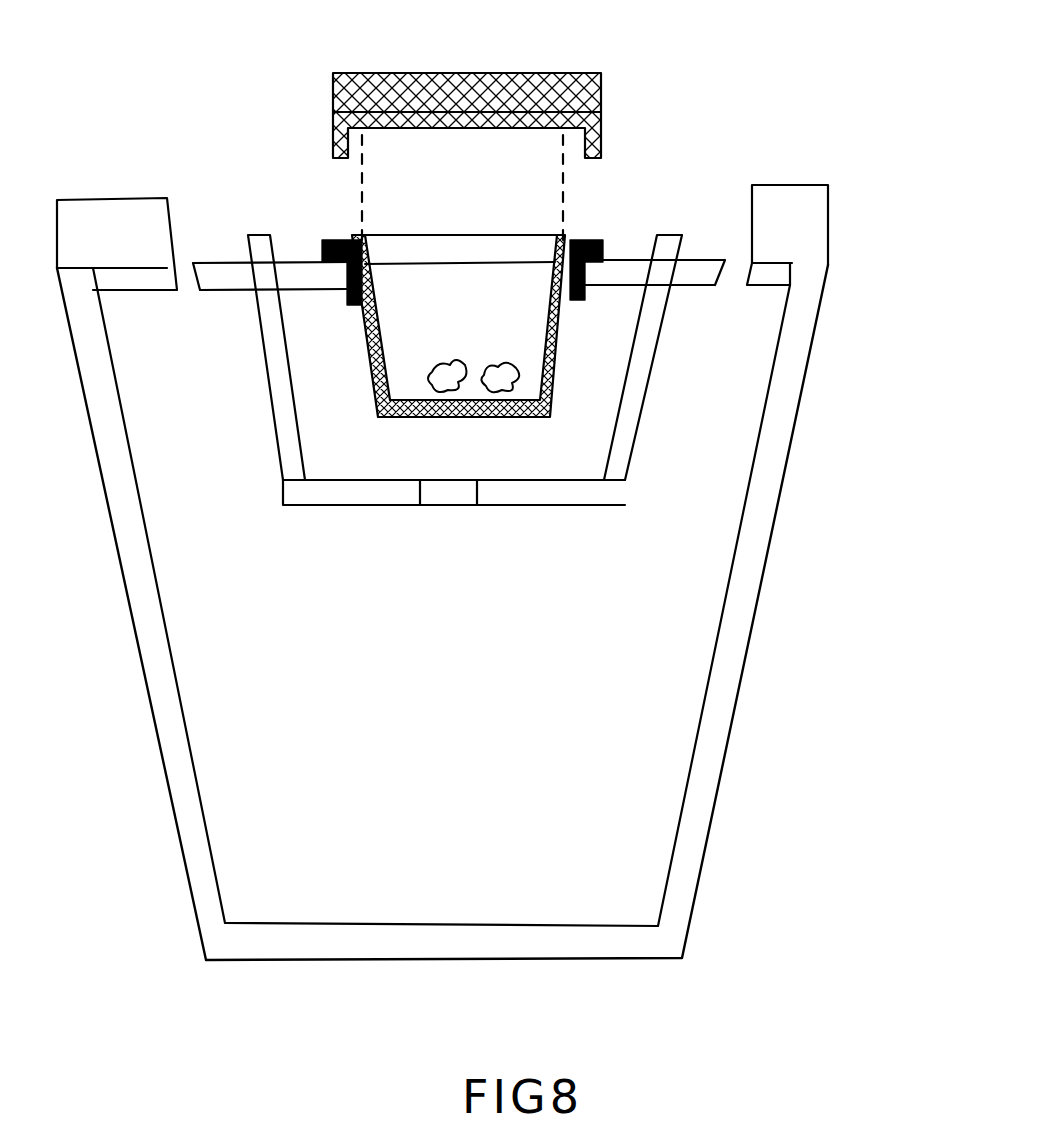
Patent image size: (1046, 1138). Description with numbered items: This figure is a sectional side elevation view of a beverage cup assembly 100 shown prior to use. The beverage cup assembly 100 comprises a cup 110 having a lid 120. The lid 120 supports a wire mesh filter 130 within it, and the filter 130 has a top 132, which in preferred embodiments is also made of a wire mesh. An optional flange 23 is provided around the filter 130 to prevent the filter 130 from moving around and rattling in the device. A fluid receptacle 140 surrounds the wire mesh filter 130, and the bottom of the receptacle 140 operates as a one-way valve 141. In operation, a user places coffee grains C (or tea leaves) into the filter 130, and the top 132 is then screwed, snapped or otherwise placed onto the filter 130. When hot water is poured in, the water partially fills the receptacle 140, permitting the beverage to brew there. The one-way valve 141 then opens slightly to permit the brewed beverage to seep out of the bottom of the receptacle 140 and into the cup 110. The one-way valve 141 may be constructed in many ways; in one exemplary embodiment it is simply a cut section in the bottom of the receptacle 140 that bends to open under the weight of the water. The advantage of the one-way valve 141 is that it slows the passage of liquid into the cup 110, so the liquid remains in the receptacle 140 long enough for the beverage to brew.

The beverage cup assembly 100 is at (513, 486).
The cup 110 is at (725, 682).
The lid 120 is at (523, 126).
The top 132 is at (448, 80).
The wire mesh filter 130 is at (598, 352).
The flange 23 is at (325, 243).
The fluid receptacle 140 is at (456, 422).
The one-way valve 141 is at (376, 535).
The coffee grains C is at (518, 370).